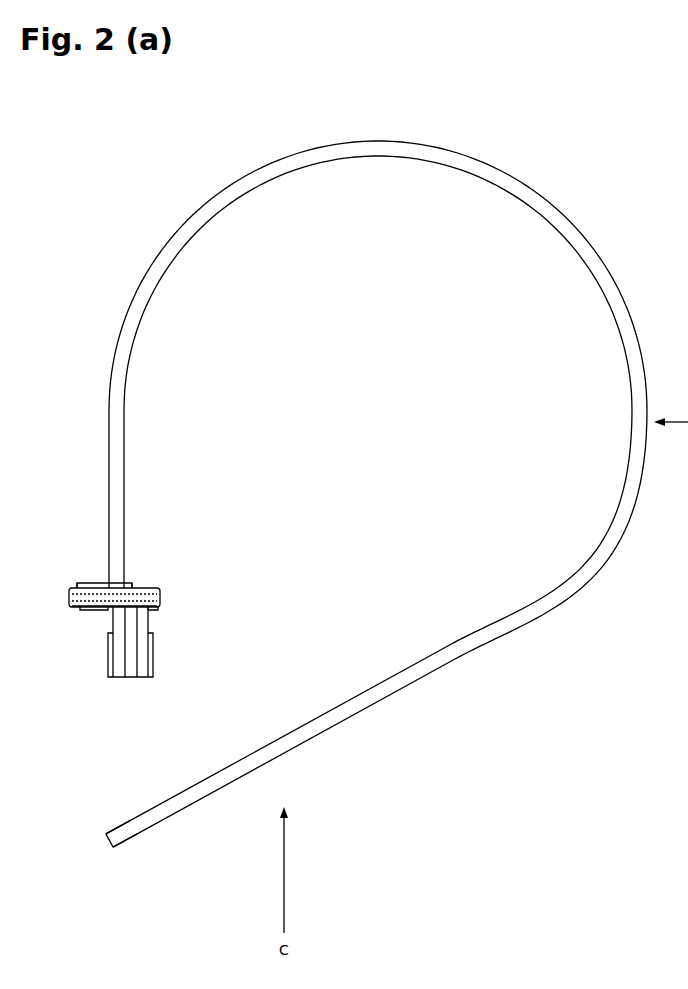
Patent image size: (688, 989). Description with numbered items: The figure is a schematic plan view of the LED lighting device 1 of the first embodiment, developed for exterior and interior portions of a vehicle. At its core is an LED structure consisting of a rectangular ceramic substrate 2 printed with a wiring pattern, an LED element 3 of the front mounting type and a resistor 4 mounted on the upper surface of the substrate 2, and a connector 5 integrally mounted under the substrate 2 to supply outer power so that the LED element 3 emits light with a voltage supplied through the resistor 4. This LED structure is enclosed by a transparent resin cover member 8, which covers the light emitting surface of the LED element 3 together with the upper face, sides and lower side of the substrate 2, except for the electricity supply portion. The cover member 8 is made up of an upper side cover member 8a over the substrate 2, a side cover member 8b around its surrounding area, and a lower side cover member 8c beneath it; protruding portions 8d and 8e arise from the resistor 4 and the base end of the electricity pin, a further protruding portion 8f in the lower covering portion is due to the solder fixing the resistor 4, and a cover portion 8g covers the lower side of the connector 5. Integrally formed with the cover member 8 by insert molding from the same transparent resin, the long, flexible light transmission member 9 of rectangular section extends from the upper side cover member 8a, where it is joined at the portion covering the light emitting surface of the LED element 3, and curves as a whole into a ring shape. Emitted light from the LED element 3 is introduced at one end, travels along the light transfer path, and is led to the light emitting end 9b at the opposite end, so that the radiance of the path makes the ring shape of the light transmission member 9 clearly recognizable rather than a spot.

The LED lighting device 1 is at (137, 166).
The substrate 2 is at (69, 600).
The LED element 3 is at (119, 573).
The resistor 4 is at (83, 581).
The connector 5 is at (110, 646).
The cover member 8 is at (226, 572).
The upper side cover member 8a is at (136, 589).
The side cover member 8b is at (161, 599).
The lower side cover member 8c is at (151, 607).
The protruding portion 8d is at (77, 584).
The protruding portion 8e is at (132, 586).
The protruding portion 8f is at (80, 608).
The cover portion 8g is at (151, 608).
The light transmission member 9 is at (585, 232).
The light emitting end 9b is at (112, 846).